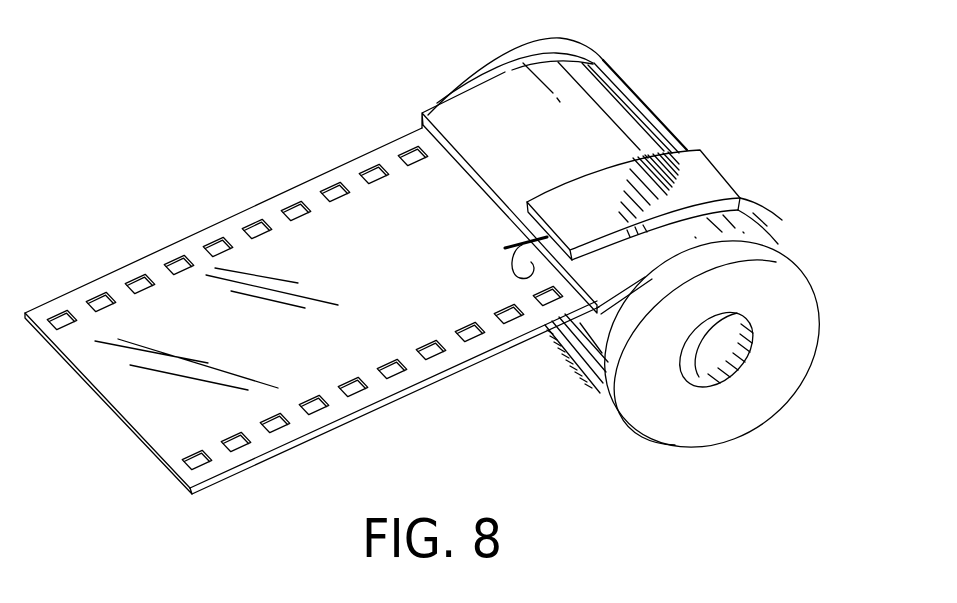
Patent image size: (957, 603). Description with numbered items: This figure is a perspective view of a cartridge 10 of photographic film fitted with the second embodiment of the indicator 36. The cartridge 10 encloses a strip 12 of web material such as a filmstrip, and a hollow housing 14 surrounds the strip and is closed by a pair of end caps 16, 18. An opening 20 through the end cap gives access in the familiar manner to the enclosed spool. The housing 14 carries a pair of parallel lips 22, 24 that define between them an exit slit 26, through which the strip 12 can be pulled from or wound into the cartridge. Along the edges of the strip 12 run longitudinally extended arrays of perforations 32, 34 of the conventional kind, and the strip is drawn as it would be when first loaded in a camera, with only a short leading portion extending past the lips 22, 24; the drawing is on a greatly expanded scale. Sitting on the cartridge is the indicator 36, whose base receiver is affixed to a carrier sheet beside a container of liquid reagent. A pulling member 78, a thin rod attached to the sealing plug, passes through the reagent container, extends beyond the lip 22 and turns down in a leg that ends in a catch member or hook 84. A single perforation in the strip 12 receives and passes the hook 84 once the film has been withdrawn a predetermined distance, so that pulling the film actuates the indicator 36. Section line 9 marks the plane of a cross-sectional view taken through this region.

The cartridge 10 is at (645, 110).
The strip 12 is at (152, 410).
The housing 14 is at (592, 90).
The end cap 16 is at (773, 347).
The end cap 18 is at (505, 62).
The opening 20 is at (727, 377).
The lip 22 is at (462, 113).
The lip 24 is at (583, 356).
The exit slit 26 is at (562, 333).
The array of perforations 32 is at (302, 433).
The array of perforations 34 is at (137, 278).
The indicator 36 is at (702, 183).
The pulling member 78 is at (523, 243).
The hook 84 is at (517, 280).
The section line 9- 9 is at (715, 152).